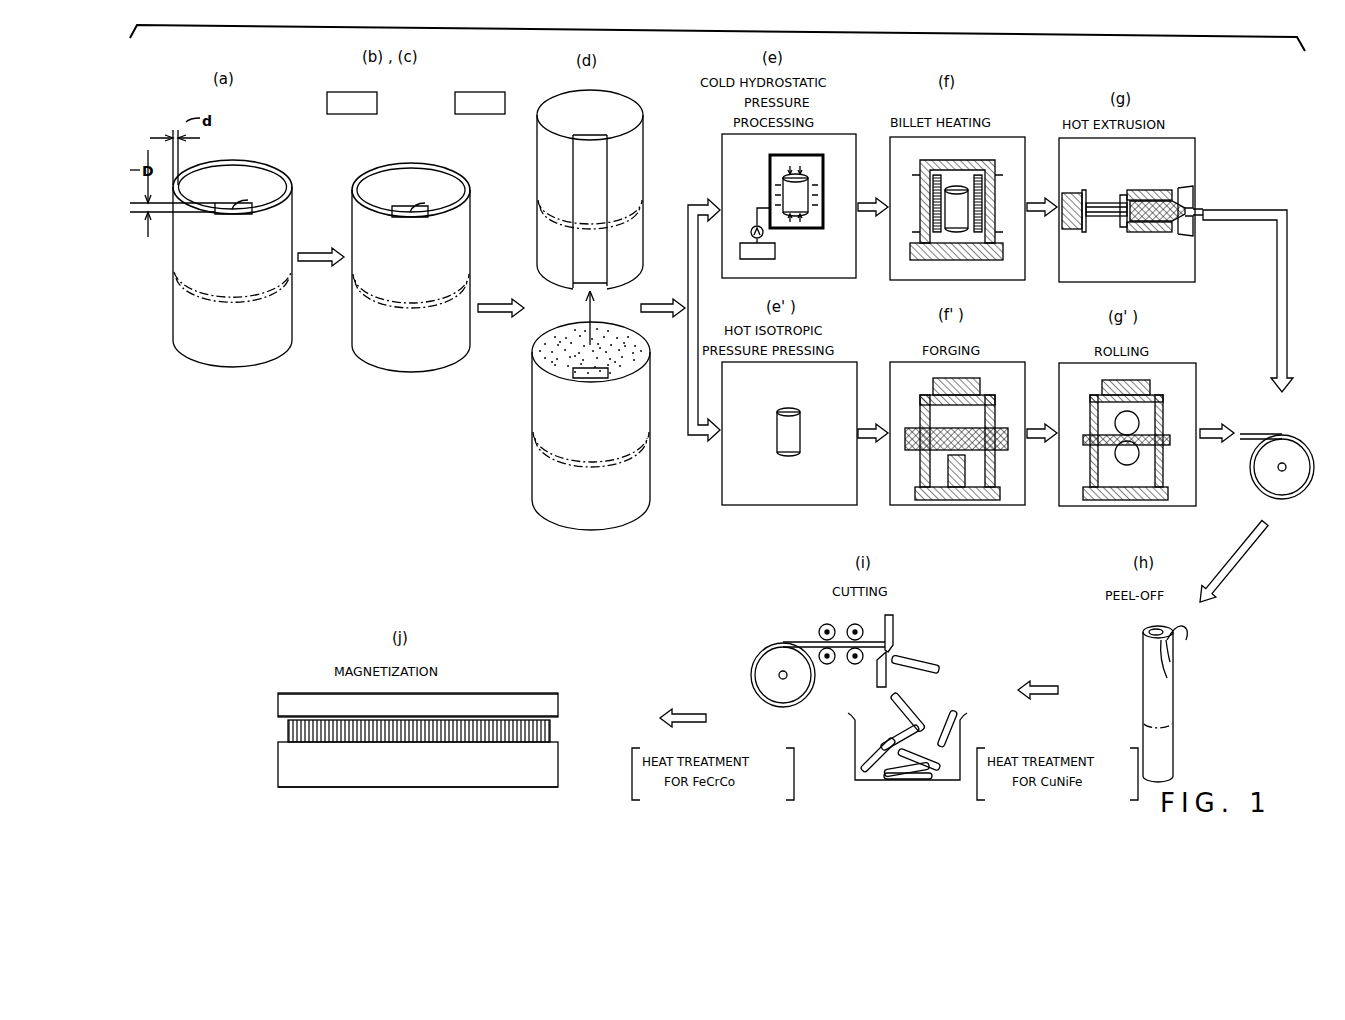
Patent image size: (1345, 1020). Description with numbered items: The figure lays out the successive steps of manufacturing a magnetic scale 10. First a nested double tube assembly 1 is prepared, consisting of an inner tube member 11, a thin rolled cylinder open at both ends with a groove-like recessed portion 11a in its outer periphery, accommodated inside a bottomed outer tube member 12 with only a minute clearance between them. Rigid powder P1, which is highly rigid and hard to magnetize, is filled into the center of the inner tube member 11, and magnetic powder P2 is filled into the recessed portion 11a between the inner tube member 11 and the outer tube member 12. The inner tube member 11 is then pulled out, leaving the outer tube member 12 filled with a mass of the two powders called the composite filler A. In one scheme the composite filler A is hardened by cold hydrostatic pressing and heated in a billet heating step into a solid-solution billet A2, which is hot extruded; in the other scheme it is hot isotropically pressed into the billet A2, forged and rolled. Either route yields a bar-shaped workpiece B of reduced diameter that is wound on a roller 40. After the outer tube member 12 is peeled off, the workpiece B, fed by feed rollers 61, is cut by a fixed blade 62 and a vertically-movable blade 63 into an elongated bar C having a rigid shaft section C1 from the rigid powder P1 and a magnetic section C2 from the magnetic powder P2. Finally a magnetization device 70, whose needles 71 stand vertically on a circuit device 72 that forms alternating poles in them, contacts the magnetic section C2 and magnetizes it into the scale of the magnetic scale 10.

The double tube assembly 1 is at (210, 372).
The inner tube member 11 is at (265, 176).
The recessed portion 11a is at (258, 198).
The outer tube member 12 is at (265, 282).
The magnetic scale 10 is at (560, 698).
The roller 40 is at (1270, 478).
The feed rollers 61 is at (818, 632).
The fixed blade 62 is at (878, 677).
The vertically-movable blade 63 is at (893, 621).
The magnetization device 70 is at (560, 768).
The needles 71 is at (290, 731).
The circuit device 72 is at (280, 762).
The composite filler A is at (806, 222).
The billet A2 is at (956, 186).
The bar-shaped workpiece B is at (1190, 212).
The elongated bar C is at (928, 660).
The rigid shaft section C1 is at (280, 699).
The magnetic section C2 is at (280, 717).
The rigid powder P1 is at (377, 103).
The magnetic powder P2 is at (455, 102).